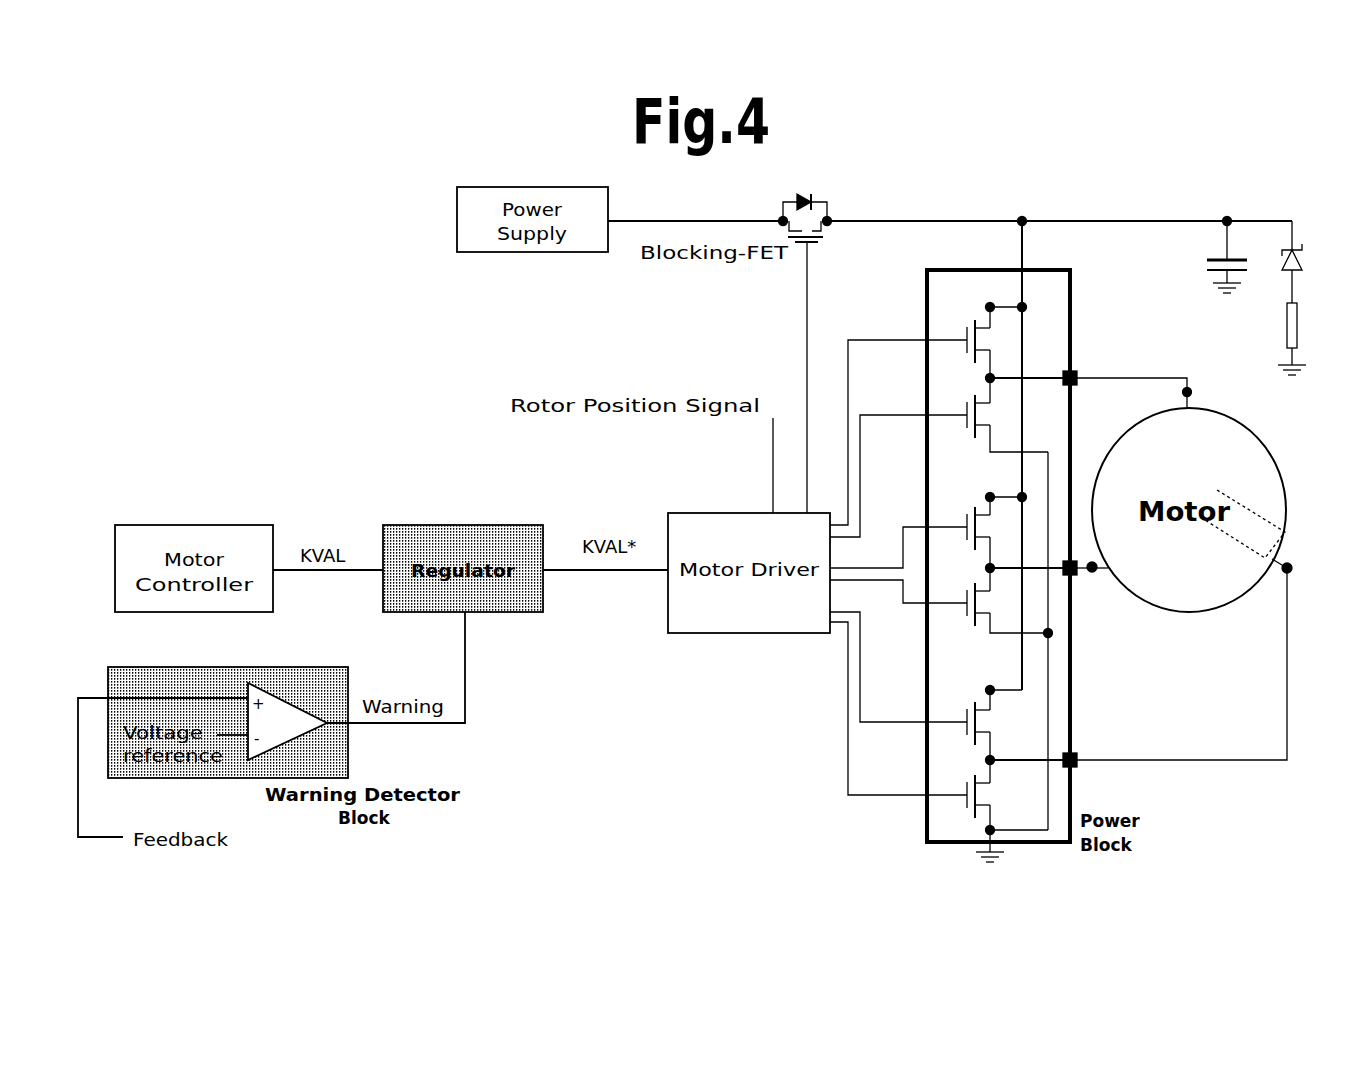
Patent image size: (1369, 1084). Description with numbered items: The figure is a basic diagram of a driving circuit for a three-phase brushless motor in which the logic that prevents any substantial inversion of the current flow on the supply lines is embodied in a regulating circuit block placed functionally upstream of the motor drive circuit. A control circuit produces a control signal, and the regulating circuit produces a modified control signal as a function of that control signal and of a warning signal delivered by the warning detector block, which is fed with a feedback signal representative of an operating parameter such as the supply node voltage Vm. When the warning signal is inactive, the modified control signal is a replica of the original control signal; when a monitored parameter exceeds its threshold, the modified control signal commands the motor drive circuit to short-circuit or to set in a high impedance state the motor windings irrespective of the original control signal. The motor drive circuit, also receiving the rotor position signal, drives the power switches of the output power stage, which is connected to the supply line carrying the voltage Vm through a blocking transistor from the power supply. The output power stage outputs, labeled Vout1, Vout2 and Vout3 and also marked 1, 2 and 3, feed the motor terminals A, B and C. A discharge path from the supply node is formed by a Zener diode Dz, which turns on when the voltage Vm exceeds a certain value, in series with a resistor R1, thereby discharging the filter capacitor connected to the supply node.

The supply node voltage Vm is at (1059, 437).
The Zener diode Dz is at (1305, 262).
The series resistor R1 is at (1304, 339).
The power block output 1 Vout1 is at (1065, 367).
The power block output 2 Vout2 is at (1058, 589).
The power block output 3 Vout3 is at (1065, 749).
The power block output Vout1 1 is at (1065, 367).
The power block output Vout2 2 is at (1058, 589).
The power block output Vout3 3 is at (1065, 749).
The motor terminal A is at (1140, 393).
The motor terminal B is at (1093, 579).
The motor terminal C is at (1181, 659).